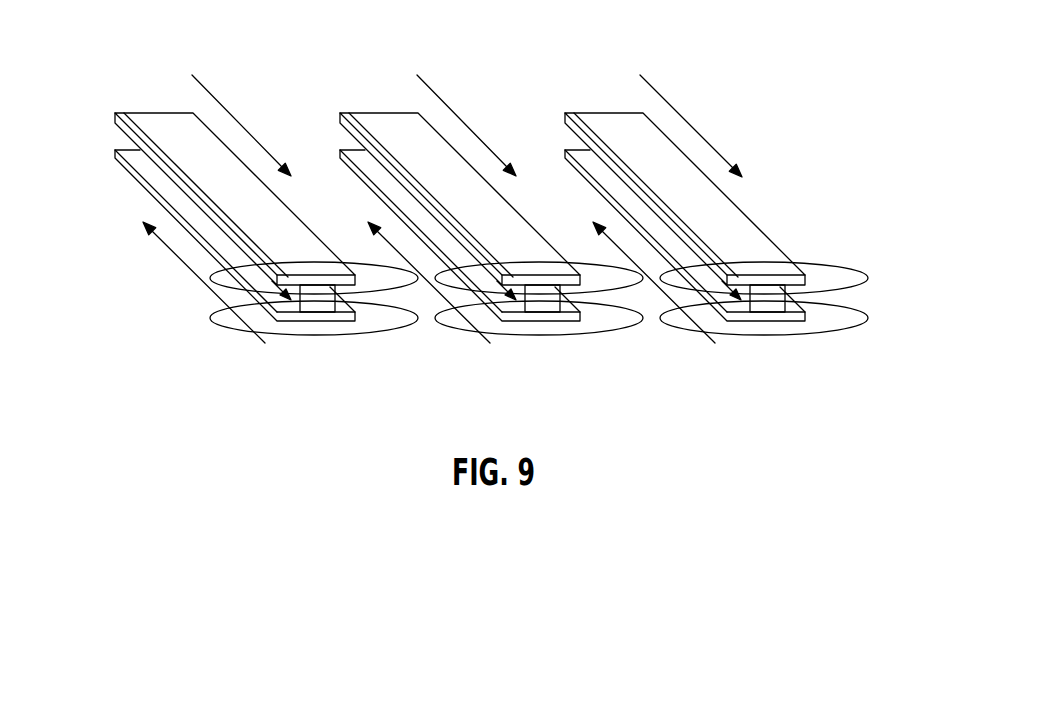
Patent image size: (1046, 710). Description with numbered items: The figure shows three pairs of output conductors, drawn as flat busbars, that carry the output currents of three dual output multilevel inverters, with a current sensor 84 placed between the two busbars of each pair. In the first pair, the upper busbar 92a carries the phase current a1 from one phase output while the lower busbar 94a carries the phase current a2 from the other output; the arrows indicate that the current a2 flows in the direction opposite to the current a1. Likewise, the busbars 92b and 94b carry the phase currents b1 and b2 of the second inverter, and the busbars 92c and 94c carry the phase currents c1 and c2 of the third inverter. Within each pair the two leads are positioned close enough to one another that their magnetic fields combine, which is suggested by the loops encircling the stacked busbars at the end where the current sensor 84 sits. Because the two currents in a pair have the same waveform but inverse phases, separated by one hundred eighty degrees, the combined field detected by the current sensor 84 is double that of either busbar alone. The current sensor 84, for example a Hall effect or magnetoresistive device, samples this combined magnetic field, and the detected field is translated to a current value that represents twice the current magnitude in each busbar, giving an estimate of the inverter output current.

The busbar 92a is at (158, 130).
The busbar 92b is at (383, 130).
The busbar 92c is at (608, 130).
The busbar 94a is at (148, 188).
The busbar 94b is at (373, 178).
The busbar 94c is at (598, 178).
The current sensor 84 is at (330, 313).
The phase current a1 is at (218, 100).
The phase current a2 is at (175, 258).
The phase current b1 is at (443, 100).
The phase current b2 is at (465, 332).
The phase current c1 is at (694, 127).
The phase current c2 is at (690, 332).